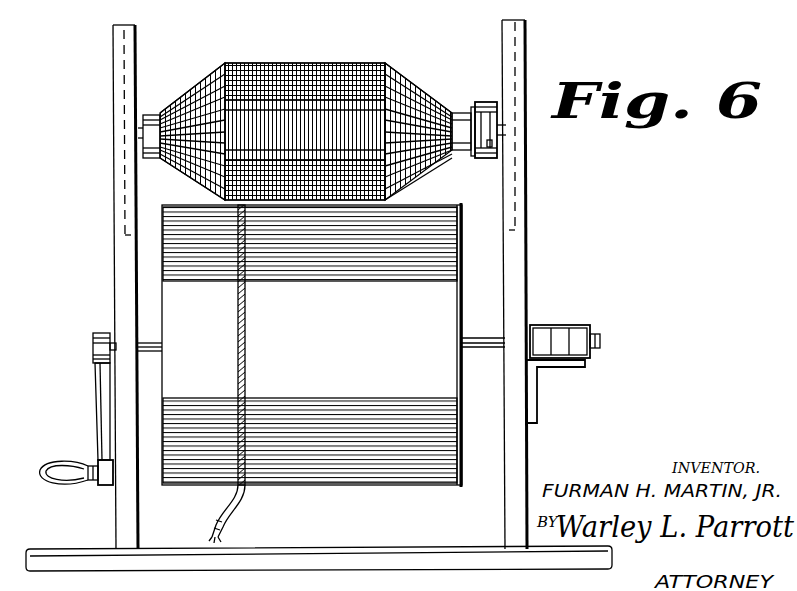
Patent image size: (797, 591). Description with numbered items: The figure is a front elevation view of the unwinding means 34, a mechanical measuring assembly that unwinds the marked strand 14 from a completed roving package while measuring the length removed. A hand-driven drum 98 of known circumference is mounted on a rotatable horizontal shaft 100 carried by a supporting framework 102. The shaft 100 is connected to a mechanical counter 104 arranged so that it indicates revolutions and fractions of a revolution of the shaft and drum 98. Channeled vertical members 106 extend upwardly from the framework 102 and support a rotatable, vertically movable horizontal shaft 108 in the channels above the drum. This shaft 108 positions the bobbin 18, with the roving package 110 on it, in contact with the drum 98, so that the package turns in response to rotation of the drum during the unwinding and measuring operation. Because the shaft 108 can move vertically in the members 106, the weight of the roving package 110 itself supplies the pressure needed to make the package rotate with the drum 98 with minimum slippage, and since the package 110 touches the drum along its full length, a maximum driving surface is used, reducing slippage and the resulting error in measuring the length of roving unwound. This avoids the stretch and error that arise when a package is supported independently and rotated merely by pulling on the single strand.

The cord / string being wound 14 is at (246, 340).
The bobbin 18 is at (455, 114).
The unwinding means 34 is at (542, 200).
The drum 98 is at (450, 279).
The shaft 100 is at (477, 337).
The supporting framework 102 is at (527, 283).
The mechanical counter 104 is at (580, 324).
The channeled vertical members 106 is at (136, 58).
The horizontal shaft 108 is at (498, 124).
The roving package 110 is at (441, 60).